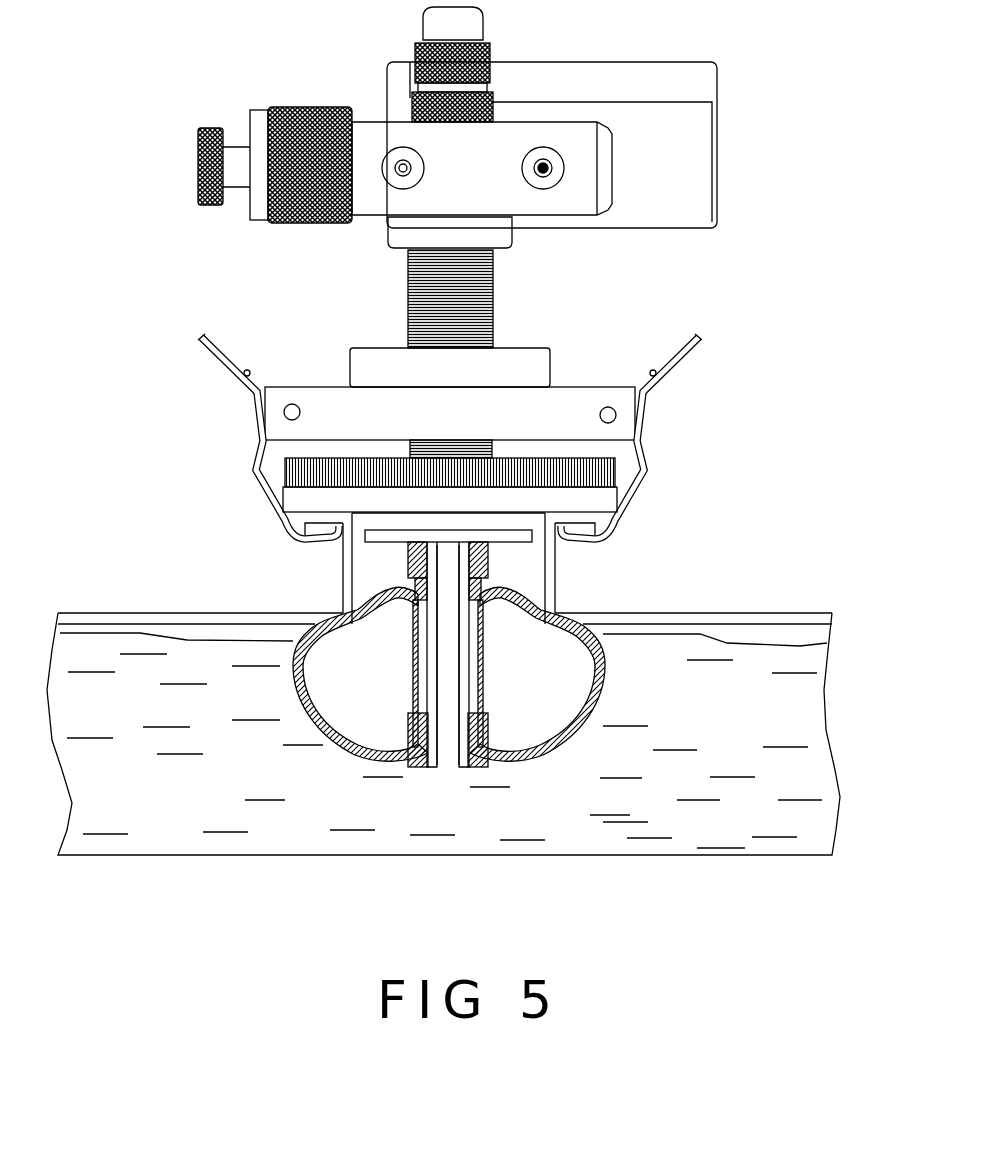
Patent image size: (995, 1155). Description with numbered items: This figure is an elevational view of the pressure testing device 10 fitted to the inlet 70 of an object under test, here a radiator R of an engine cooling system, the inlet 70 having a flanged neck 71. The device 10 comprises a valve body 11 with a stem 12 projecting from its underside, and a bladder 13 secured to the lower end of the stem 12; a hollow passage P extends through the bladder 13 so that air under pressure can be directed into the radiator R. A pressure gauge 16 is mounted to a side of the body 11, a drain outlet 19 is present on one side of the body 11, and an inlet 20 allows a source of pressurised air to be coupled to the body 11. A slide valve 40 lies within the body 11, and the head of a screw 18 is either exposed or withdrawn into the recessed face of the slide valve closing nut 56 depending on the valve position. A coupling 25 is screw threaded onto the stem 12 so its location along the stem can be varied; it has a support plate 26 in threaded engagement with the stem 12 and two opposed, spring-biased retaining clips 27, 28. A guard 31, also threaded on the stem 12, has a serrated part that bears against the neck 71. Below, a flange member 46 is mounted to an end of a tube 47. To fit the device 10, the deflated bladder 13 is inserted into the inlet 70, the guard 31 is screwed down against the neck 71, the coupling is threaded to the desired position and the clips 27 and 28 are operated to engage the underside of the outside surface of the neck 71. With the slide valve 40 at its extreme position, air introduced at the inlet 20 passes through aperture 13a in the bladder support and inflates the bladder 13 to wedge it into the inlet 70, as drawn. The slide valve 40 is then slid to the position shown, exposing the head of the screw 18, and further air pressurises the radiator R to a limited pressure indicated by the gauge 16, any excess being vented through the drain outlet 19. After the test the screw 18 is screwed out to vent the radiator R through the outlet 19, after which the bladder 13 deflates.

The pressure testing device 10 is at (461, 232).
The valve body 11 is at (553, 174).
The stem 12 is at (493, 297).
The bladder 13 is at (308, 723).
The aperture 13a is at (486, 690).
The pressure gauge 16 is at (708, 220).
The screw 18 is at (197, 173).
The drain outlet 19 is at (401, 178).
The inlet 20 is at (547, 178).
The coupling 25 is at (451, 417).
The support plate 26 is at (318, 393).
The retaining clip 27 is at (252, 482).
The retaining clip 28 is at (640, 493).
The guard 31 is at (303, 477).
The slide valve 40 is at (608, 172).
The flange member 46 is at (468, 697).
The tube 47 is at (432, 698).
The slide valve closing nut 56 is at (295, 106).
The inlet 70 is at (497, 568).
The flanged neck 71 is at (590, 518).
The probe gap P is at (448, 758).
The radiator R is at (795, 768).